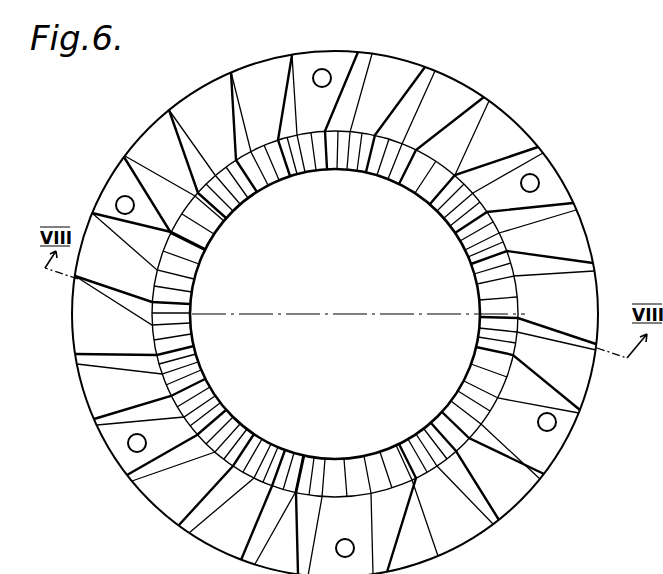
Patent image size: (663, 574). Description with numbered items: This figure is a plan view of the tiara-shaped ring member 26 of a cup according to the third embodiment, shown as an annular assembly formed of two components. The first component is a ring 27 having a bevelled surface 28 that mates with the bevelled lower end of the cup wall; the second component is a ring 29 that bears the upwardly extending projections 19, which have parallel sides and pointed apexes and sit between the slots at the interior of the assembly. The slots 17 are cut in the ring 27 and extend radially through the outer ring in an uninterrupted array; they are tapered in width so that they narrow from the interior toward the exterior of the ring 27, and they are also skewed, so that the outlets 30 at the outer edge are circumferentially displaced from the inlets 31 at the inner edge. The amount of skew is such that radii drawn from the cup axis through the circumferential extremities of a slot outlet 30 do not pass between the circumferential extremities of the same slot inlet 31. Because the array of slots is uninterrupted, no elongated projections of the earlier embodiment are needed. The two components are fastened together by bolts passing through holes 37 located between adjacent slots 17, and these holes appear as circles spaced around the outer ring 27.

The slots 17 is at (292, 55).
The projections 19 is at (222, 218).
The tiara-shaped ring member 26 is at (148, 132).
The ring 27 is at (254, 67).
The bevelled surface 28 is at (205, 108).
The ring 29 is at (262, 198).
The outlets 30 is at (123, 158).
The inlets 31 is at (166, 268).
The holes 37 is at (116, 204).